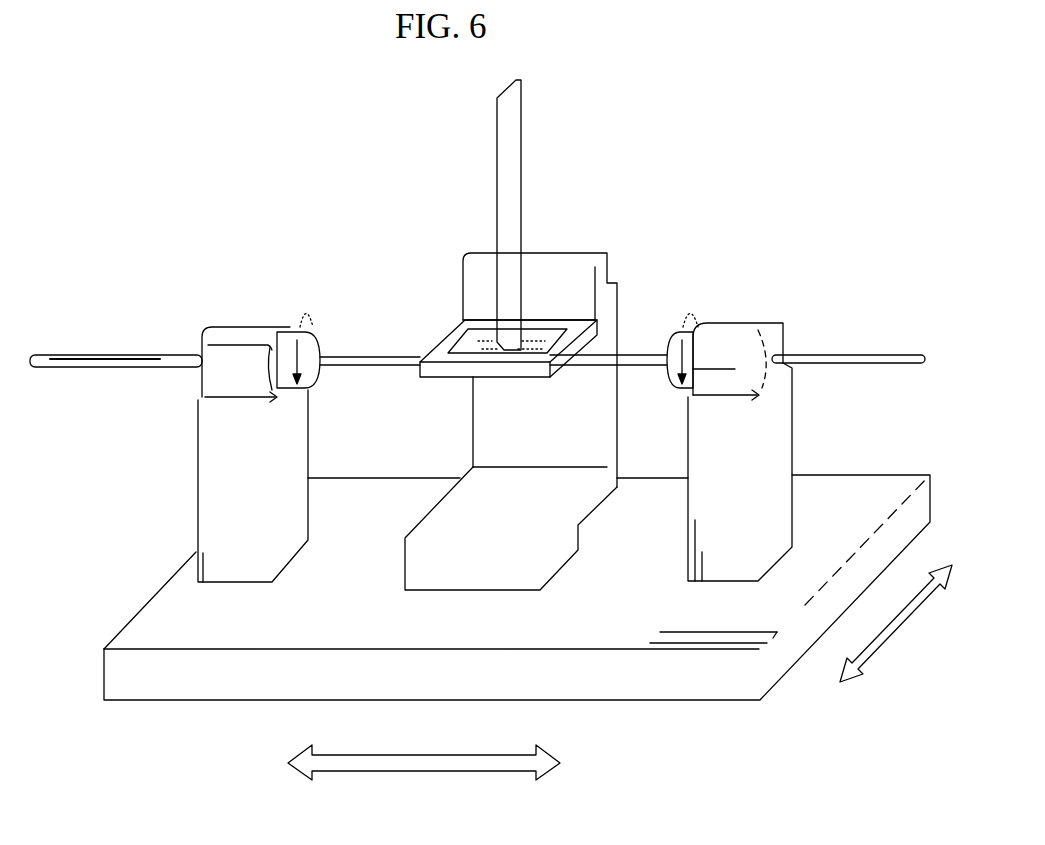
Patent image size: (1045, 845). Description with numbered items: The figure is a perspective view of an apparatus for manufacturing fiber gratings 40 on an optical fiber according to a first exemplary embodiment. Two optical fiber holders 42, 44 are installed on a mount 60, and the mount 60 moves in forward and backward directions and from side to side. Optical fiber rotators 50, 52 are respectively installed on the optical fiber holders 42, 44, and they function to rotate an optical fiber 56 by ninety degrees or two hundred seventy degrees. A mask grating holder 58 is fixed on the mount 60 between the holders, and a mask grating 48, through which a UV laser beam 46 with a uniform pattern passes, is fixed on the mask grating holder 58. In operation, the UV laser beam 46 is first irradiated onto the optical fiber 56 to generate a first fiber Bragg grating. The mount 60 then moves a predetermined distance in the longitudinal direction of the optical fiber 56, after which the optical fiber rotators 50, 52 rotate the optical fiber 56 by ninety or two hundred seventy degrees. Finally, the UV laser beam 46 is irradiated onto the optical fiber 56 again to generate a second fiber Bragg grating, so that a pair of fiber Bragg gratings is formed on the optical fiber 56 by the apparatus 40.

The apparatus for manufacturing fiber gratings 40 is at (679, 207).
The optical fiber holder 42 is at (213, 440).
The optical fiber holder 44 is at (777, 452).
The UV laser beam 46 is at (512, 188).
The mask grating 48 is at (467, 340).
The optical fiber rotator 50 is at (240, 332).
The optical fiber rotator 52 is at (740, 330).
The optical fiber 56 is at (840, 358).
The mask grating holder 58 is at (483, 418).
The mount 60 is at (715, 680).